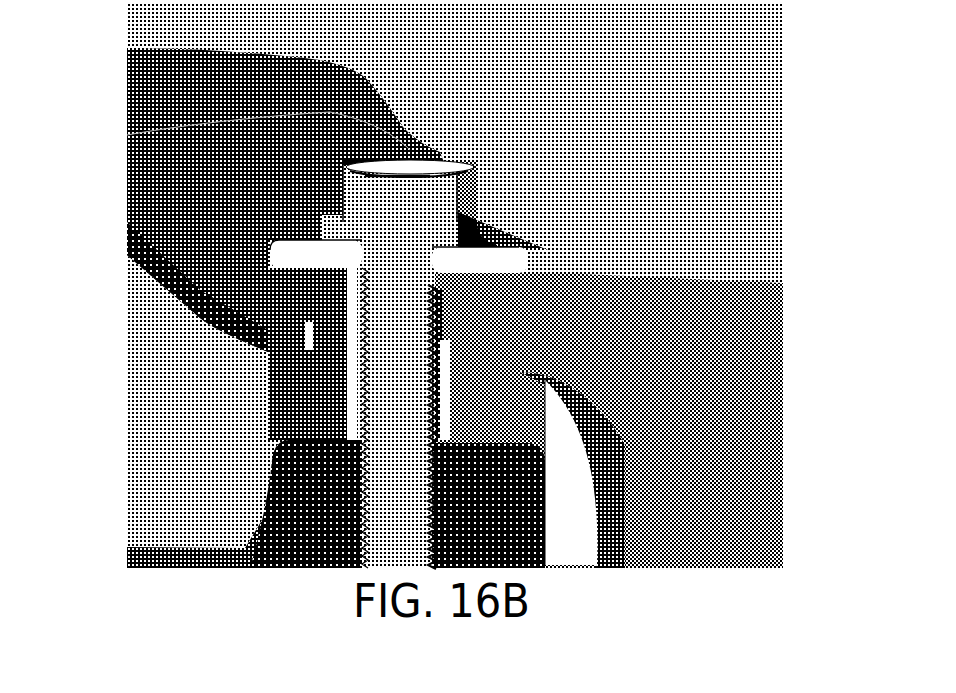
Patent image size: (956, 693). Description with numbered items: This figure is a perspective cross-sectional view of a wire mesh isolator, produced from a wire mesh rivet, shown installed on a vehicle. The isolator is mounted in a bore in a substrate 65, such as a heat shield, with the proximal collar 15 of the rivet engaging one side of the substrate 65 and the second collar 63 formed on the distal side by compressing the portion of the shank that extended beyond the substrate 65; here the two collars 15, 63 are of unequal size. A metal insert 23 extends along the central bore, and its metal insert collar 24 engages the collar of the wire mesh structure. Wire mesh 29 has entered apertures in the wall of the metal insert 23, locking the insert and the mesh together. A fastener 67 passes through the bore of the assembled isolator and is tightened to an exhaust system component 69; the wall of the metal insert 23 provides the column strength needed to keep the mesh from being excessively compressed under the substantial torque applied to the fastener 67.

The collar of wire mesh rivet 15 is at (298, 292).
The metal insert 23 is at (446, 386).
The metal insert collar 24 is at (495, 255).
The wire mesh in aperture of wall of metal insert 29 is at (448, 313).
The second collar of wire mesh isolator 63 is at (290, 398).
The substrate 65 is at (200, 313).
The fastener 67 is at (432, 208).
The exhaust system component 69 is at (290, 510).